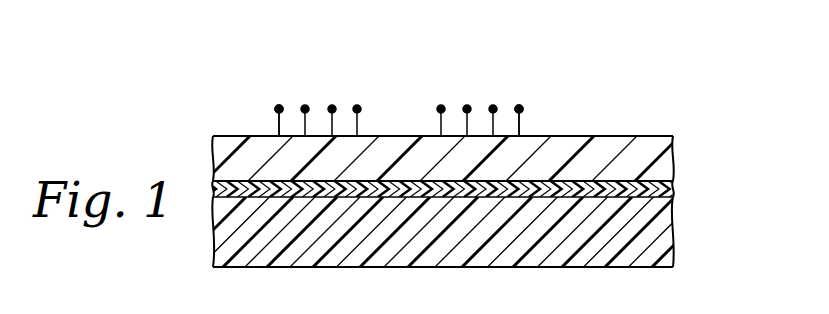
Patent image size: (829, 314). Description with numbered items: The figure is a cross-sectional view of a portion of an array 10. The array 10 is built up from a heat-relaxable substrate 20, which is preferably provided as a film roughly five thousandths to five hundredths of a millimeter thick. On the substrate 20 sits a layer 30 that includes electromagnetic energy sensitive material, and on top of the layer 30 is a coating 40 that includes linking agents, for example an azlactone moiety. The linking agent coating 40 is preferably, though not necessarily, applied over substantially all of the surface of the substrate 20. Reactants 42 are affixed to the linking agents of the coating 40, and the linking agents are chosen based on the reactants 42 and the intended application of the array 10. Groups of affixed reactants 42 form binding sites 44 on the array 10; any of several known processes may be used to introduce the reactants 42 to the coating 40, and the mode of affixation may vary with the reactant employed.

The array 10 is at (732, 75).
The heat-relaxable substrate 20 is at (664, 234).
The layer including electromagnetic energy sensitive material 30 is at (671, 190).
The linking agent coating 40 is at (673, 156).
The reactants 42 is at (279, 120).
The binding sites 44 is at (362, 94).